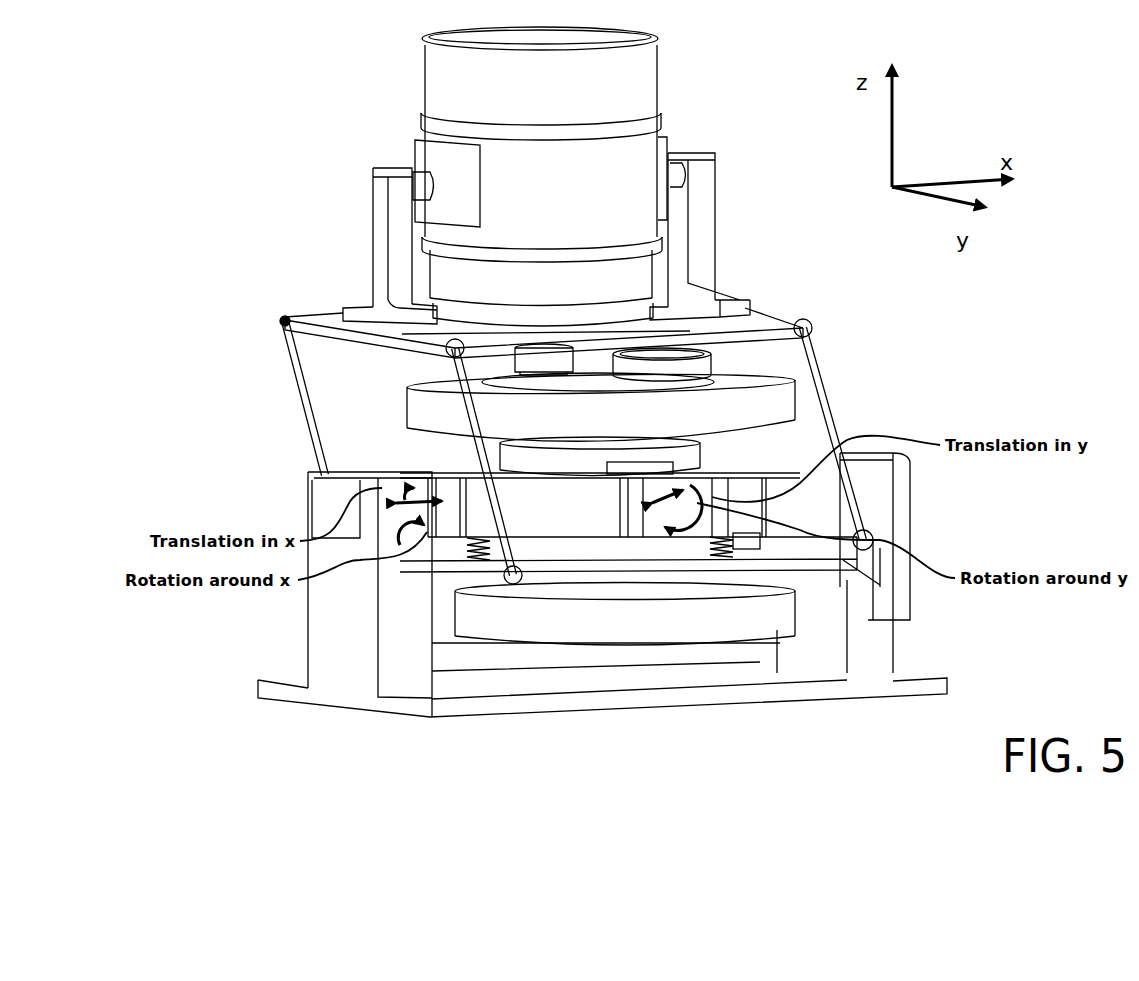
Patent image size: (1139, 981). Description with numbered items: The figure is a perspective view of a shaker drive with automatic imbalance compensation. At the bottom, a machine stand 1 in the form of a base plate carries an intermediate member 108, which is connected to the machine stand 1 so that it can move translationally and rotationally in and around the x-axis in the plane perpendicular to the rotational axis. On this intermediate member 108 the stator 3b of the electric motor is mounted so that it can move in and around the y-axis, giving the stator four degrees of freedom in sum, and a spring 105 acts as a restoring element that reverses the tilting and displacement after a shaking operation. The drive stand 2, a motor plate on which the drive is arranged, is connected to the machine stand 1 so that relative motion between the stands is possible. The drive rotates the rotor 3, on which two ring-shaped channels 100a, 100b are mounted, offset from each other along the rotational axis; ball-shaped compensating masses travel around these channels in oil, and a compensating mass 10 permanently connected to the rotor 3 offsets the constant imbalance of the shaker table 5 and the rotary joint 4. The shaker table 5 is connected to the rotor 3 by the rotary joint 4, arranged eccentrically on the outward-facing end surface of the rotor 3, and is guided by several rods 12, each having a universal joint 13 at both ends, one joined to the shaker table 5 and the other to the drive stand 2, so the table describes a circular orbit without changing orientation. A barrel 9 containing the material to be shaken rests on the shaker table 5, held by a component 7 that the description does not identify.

The machine stand 1 is at (875, 645).
The drive stand 2 is at (442, 575).
The rotor 3 is at (607, 597).
The stator 3b is at (521, 460).
The rotary joint 4 is at (525, 358).
The shaker table 5 is at (768, 320).
The bracket 7 is at (381, 192).
The barrel 9 is at (635, 80).
The compensating mass 10 is at (693, 363).
The rods 12 is at (305, 403).
The universal joint 13 is at (283, 324).
The ring-shaped channel 100a is at (768, 408).
The ring-shaped channel 100b is at (737, 623).
The spring 105 is at (857, 555).
The intermediate member 108 is at (882, 503).